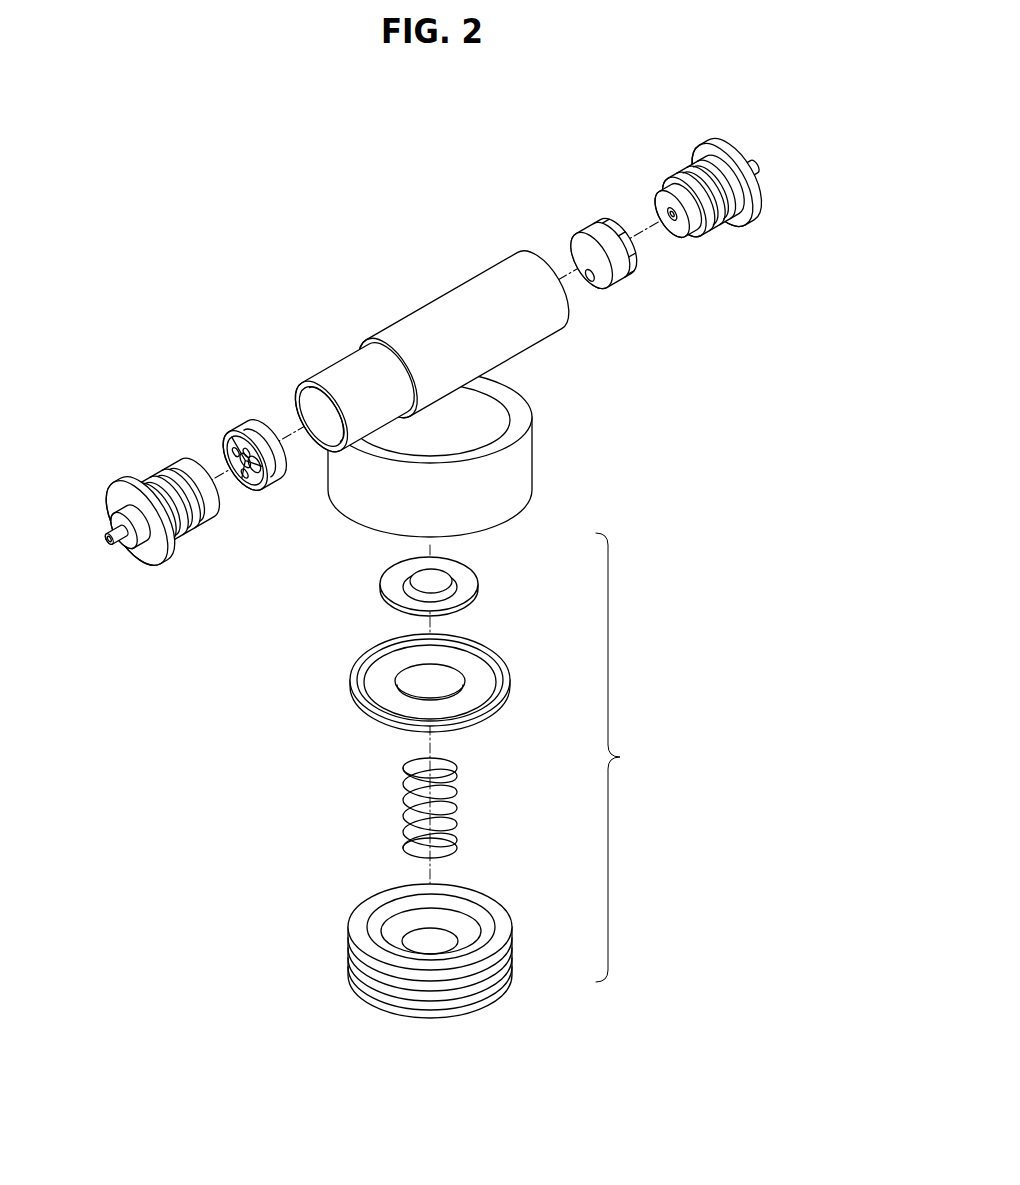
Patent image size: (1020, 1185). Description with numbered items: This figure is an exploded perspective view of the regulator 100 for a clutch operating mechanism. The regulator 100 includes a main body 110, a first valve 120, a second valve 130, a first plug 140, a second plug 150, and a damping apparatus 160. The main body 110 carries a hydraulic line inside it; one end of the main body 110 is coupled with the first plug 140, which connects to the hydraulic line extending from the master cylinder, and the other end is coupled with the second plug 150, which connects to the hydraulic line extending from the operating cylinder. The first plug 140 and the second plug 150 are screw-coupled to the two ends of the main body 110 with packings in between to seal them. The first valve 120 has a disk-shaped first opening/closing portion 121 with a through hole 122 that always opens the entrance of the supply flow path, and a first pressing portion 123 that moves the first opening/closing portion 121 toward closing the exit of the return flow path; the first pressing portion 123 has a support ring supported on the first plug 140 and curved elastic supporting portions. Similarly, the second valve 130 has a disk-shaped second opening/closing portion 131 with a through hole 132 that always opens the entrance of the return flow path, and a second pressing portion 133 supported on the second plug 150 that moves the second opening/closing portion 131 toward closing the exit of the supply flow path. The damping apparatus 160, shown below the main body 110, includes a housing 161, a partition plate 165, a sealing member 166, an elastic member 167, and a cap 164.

The regulator 100 is at (722, 485).
The main body 110 is at (420, 325).
The first valve 120 is at (224, 446).
The first opening/closing portion 121 is at (260, 420).
The through hole 122 is at (257, 493).
The first pressing portion 123 is at (233, 430).
The second valve 130 is at (567, 255).
The second opening/closing portion 131 is at (580, 243).
The through hole 132 is at (588, 289).
The second pressing portion 133 is at (608, 223).
The first plug 140 is at (163, 483).
The second plug 150 is at (700, 162).
The damping apparatus 160 is at (630, 757).
The housing 161 is at (503, 497).
The cap 164 is at (510, 942).
The partition plate 165 is at (478, 590).
The sealing member 166 is at (500, 695).
The elastic member 167 is at (458, 802).